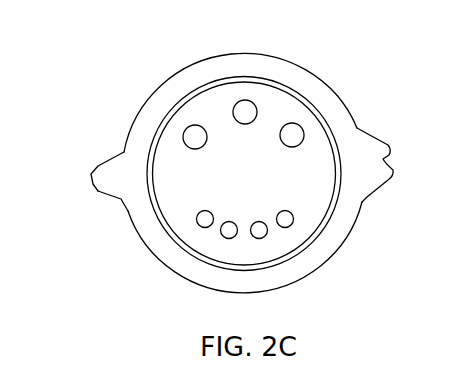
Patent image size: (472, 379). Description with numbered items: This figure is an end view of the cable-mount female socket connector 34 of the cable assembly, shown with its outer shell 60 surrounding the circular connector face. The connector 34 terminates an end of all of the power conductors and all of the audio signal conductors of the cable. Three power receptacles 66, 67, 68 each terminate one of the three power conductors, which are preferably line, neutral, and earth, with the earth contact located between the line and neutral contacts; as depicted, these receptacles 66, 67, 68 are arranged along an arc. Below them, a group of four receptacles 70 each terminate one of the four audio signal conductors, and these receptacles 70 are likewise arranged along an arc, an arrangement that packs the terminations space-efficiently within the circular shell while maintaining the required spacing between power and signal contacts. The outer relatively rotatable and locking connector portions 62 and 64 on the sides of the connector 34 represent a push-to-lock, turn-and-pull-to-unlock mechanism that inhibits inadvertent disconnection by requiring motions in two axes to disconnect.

The female socket connector 34 is at (337, 78).
The connector face 60 is at (148, 84).
The outer relatively rotatable and locking connector portion 62 is at (86, 189).
The outer relatively rotatable and locking connector portion 64 is at (99, 200).
The receptacle 66 is at (188, 137).
The receptacle 67 is at (240, 107).
The receptacle 68 is at (300, 134).
The receptacles 70 is at (244, 222).